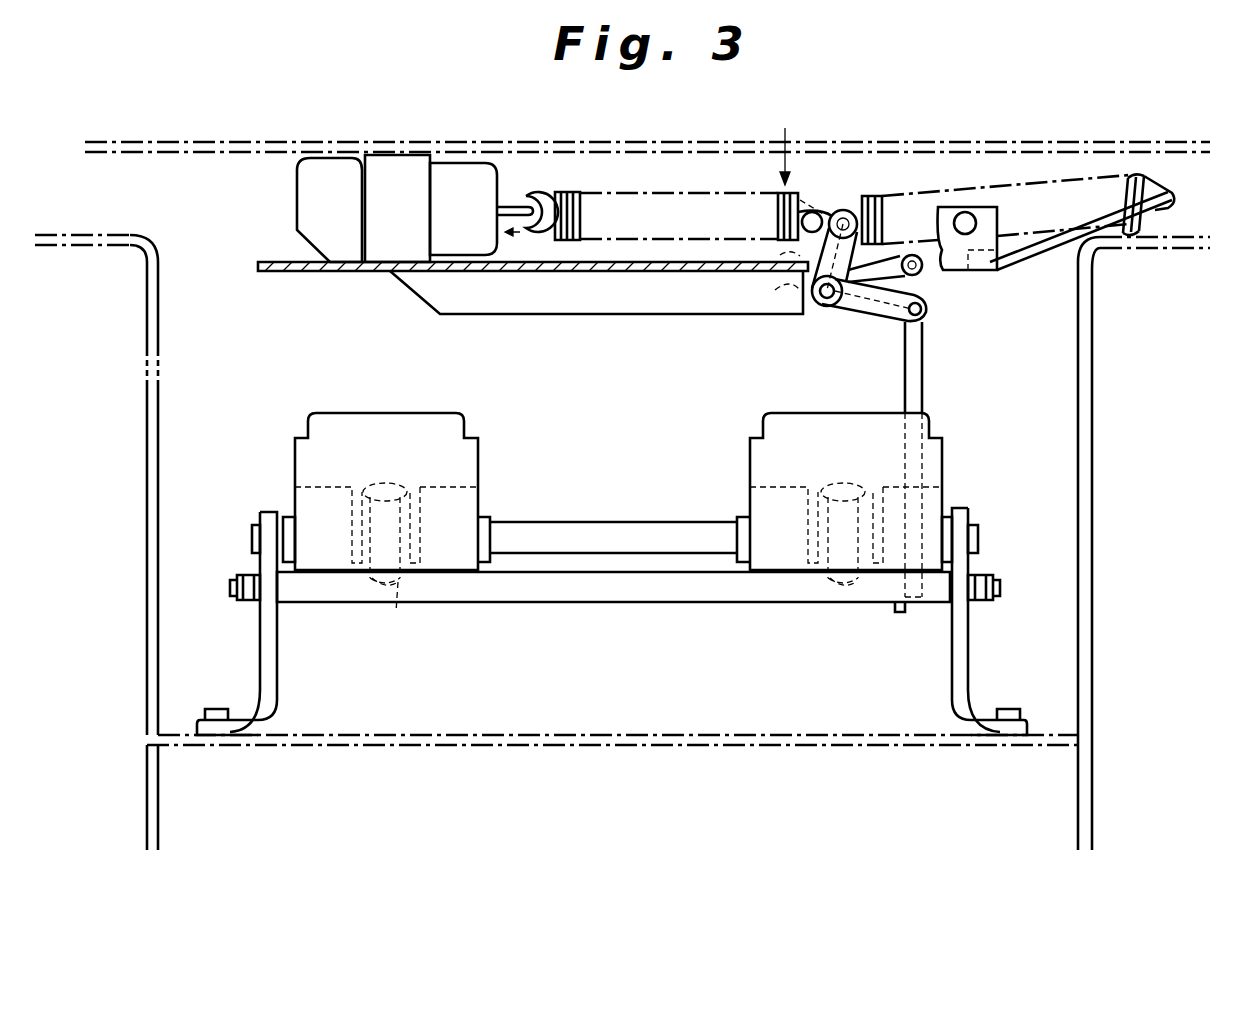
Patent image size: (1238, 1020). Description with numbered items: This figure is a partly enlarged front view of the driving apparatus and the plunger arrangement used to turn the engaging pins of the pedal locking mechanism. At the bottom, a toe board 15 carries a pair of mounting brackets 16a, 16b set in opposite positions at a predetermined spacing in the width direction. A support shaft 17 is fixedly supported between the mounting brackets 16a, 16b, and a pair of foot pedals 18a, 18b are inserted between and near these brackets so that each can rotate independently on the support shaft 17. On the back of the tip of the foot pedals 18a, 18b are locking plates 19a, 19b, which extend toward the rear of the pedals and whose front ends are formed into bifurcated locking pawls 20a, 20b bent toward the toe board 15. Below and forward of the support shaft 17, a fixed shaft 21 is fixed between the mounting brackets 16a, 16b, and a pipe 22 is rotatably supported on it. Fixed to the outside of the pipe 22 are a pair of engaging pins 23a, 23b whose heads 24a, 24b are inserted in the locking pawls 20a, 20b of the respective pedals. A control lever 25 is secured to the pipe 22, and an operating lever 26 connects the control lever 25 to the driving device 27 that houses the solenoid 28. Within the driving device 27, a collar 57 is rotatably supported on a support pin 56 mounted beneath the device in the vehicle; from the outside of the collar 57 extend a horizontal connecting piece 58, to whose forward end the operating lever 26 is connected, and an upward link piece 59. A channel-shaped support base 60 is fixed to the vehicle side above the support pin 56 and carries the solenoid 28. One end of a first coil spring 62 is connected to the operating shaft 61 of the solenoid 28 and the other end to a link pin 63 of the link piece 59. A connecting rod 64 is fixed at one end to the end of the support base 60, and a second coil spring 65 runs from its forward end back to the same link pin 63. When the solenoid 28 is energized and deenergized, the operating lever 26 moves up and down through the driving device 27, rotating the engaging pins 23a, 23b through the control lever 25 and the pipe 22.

The toe board 15 is at (645, 733).
The mounting bracket 16a is at (951, 683).
The mounting bracket 16b is at (278, 662).
The support shaft 17 is at (612, 522).
The foot pedal 18a is at (828, 420).
The foot pedal 18b is at (392, 418).
The locking plate 19a is at (750, 498).
The locking plate 19b is at (478, 500).
The locking pawl 20a is at (808, 542).
The locking pawl 20b is at (352, 540).
The fixed shaft 21 is at (283, 600).
The pipe 22 is at (567, 602).
The engaging pin 23a is at (832, 588).
The engaging pin 23b is at (396, 612).
The head 24a is at (855, 478).
The head 24b is at (378, 486).
The control lever 25 is at (905, 608).
The operating lever 26 is at (924, 374).
The driving device 27 is at (784, 142).
The solenoid 28 is at (463, 162).
The support pin 56 is at (838, 306).
The collar 57 is at (808, 300).
The connecting piece 58 is at (928, 283).
The link piece 59 is at (798, 284).
The support base 60 is at (595, 273).
The operating shaft 61 is at (522, 204).
The first coil spring 62 is at (572, 197).
The link pin 63 is at (842, 212).
The connecting rod 64 is at (1042, 238).
The second coil spring 65 is at (916, 196).